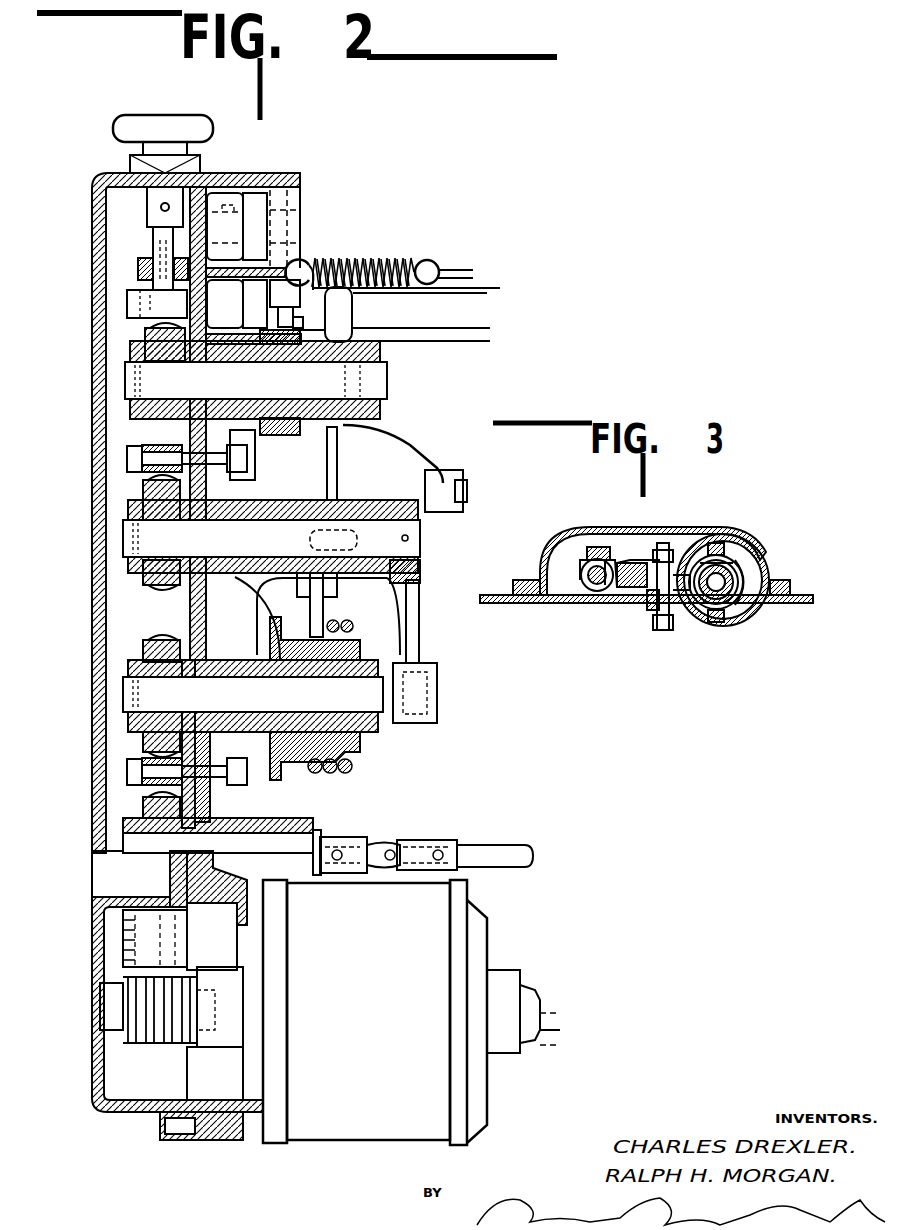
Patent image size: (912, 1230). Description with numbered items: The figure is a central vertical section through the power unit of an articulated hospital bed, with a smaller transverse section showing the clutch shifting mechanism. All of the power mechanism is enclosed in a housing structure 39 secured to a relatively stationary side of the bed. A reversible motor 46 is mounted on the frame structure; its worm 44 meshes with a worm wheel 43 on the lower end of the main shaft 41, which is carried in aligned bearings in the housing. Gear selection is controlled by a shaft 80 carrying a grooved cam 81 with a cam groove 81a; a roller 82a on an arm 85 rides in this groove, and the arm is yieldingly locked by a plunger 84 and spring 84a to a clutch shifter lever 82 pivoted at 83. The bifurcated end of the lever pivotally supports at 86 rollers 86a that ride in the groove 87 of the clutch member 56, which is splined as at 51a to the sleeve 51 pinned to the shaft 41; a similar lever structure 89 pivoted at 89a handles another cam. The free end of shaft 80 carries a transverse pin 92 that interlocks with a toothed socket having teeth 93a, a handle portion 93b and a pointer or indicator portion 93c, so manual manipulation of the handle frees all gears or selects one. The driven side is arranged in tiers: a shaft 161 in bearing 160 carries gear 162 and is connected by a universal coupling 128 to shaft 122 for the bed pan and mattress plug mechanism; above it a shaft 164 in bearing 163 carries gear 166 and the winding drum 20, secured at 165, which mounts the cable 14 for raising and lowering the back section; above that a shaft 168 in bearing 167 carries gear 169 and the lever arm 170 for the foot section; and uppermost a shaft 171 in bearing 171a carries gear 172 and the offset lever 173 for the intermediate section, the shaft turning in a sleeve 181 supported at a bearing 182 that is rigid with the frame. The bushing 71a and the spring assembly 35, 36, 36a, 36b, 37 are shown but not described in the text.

In FIG. 2, the housing structure 39 is at (97, 178).
In FIG. 2, the handle portion 93b is at (175, 128).
In FIG. 2, the pointer or indicator portion 93c is at (195, 165).
In FIG. 2, the transverse pin 92 is at (160, 207).
In FIG. 2, the teeth 93a is at (155, 217).
In FIG. 2, the shaft 80 is at (155, 240).
In FIG. 3, the shaft 80 is at (597, 590).
In FIG. 2, the bushing 71a is at (140, 270).
In FIG. 2, the gear 172 is at (150, 338).
In FIG. 2, the bearing 171a is at (224, 322).
In FIG. 2, the spring hook 35 is at (307, 262).
In FIG. 2, the spring 36 is at (383, 257).
In FIG. 2, the spring anchor rod 37 is at (440, 268).
In FIG. 2, the spring end 36a is at (318, 283).
In FIG. 2, the lever 36b is at (433, 292).
In FIG. 2, the shaft 171 is at (300, 388).
In FIG. 2, the offset lever 173 is at (410, 440).
In FIG. 2, the sleeve 181 is at (340, 428).
In FIG. 2, the bearing 182 is at (292, 436).
In FIG. 2, the lever arm 170 is at (256, 425).
In FIG. 2, the lever structure 89 is at (150, 450).
In FIG. 2, the pivot 89a is at (143, 460).
In FIG. 2, the gear 169 is at (150, 497).
In FIG. 2, the bearing 167 is at (258, 505).
In FIG. 2, the shaft 168 is at (368, 530).
In FIG. 2, the bearing 163 is at (240, 657).
In FIG. 2, the securing point 165 is at (378, 658).
In FIG. 2, the gear 166 is at (150, 650).
In FIG. 2, the shaft 164 is at (250, 695).
In FIG. 2, the winding drum 20 is at (363, 747).
In FIG. 2, the cable 14 is at (330, 778).
In FIG. 2, the clutch shifter lever 82 is at (150, 760).
In FIG. 3, the clutch shifter lever 82 is at (683, 590).
In FIG. 2, the pivot 83 is at (130, 770).
In FIG. 3, the pivot 83 is at (665, 572).
In FIG. 2, the gear 162 is at (145, 808).
In FIG. 2, the bearing 160 is at (312, 824).
In FIG. 2, the shaft 161 is at (285, 855).
In FIG. 2, the universal coupling 128 is at (425, 838).
In FIG. 2, the shaft 122 is at (514, 853).
In FIG. 2, the worm wheel 43 is at (108, 1010).
In FIG. 2, the worm 44 is at (140, 1040).
In FIG. 2, the motor 46 is at (435, 970).
In FIG. 3, the roller 82a is at (575, 557).
In FIG. 3, the shaft 41 is at (700, 623).
In FIG. 3, the cam groove 81a is at (587, 592).
In FIG. 3, the grooved cam 81 is at (606, 590).
In FIG. 3, the arm 85 is at (603, 547).
In FIG. 3, the spring 84a is at (630, 562).
In FIG. 3, the plunger 84 is at (640, 588).
In FIG. 3, the pivot 86 is at (735, 560).
In FIG. 3, the roller 86a is at (725, 552).
In FIG. 3, the spline 51a is at (740, 560).
In FIG. 3, the clutch member 56 is at (726, 575).
In FIG. 3, the sleeve 51 is at (727, 600).
In FIG. 3, the groove 87 is at (745, 598).